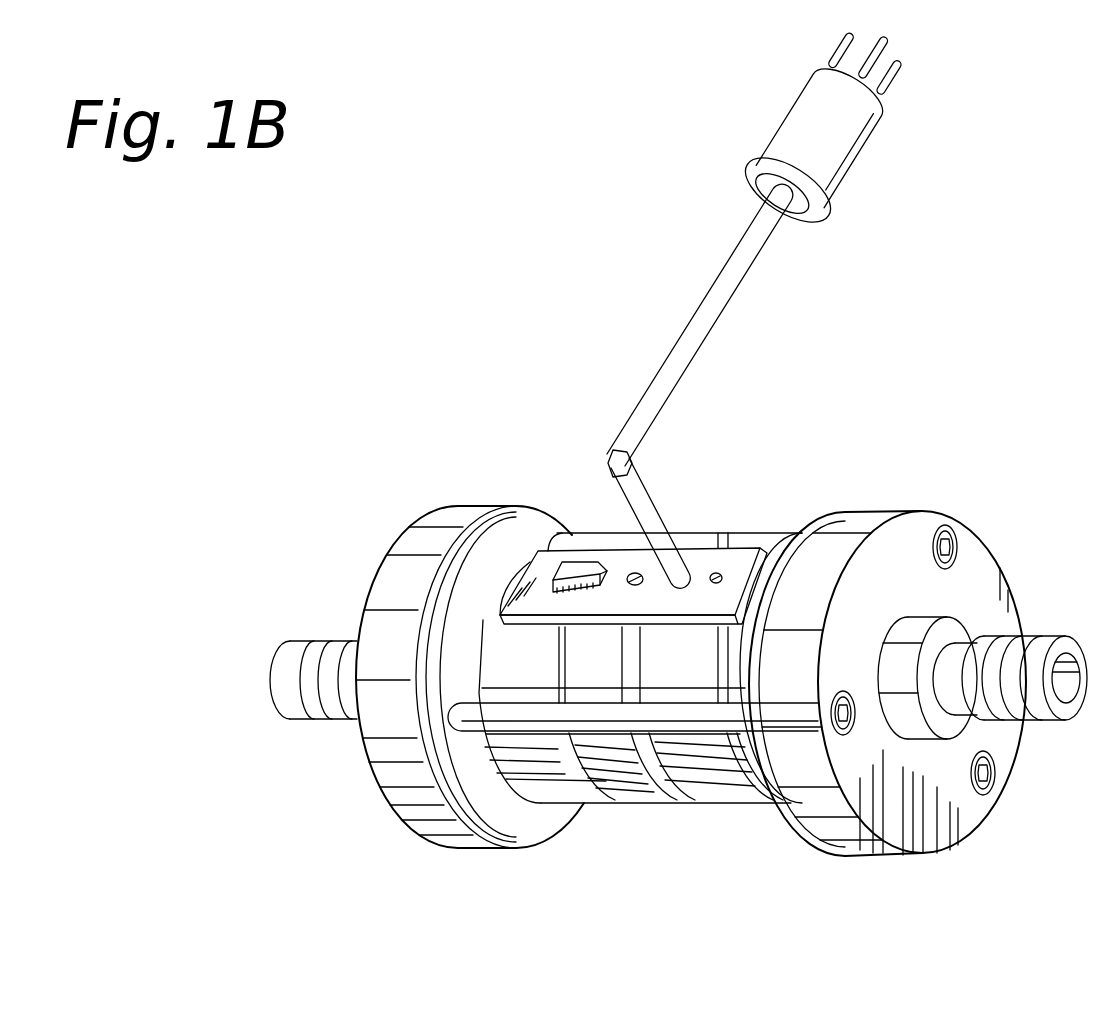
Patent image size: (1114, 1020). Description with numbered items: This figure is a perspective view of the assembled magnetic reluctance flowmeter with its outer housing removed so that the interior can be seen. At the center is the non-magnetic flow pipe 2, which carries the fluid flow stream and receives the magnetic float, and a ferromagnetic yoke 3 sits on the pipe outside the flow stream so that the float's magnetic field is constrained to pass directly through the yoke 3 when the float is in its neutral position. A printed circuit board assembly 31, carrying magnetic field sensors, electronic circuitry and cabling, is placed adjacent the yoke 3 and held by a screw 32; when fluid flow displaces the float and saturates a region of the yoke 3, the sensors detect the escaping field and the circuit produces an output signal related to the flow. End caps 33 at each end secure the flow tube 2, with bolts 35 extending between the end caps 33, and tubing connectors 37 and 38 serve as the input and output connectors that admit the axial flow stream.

The non-magnetic flow pipe 2 is at (542, 777).
The ferromagnetic yoke 3 is at (623, 775).
The printed circuit board assembly 31 is at (703, 567).
The screw 32 is at (633, 574).
The end caps 33 is at (410, 820).
The bolts 35 is at (523, 722).
The tubing connector 37 is at (1042, 697).
The tubing connector 38 is at (273, 682).